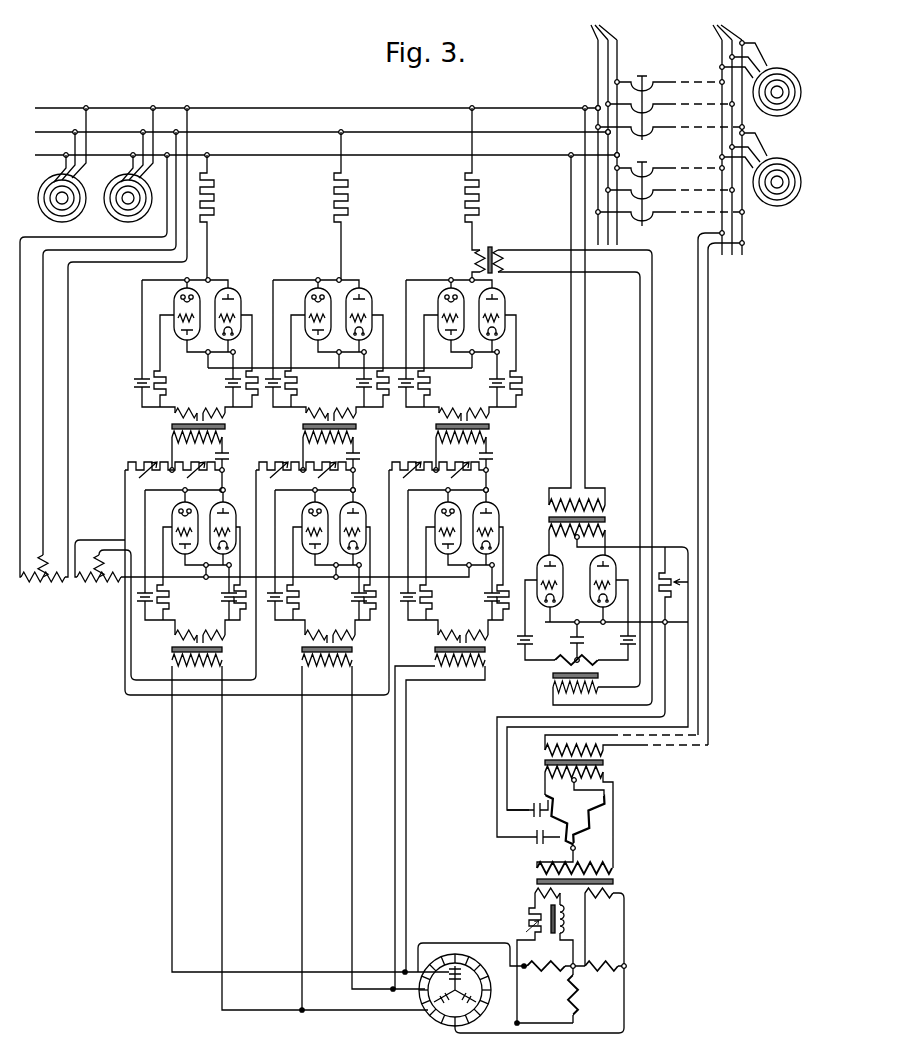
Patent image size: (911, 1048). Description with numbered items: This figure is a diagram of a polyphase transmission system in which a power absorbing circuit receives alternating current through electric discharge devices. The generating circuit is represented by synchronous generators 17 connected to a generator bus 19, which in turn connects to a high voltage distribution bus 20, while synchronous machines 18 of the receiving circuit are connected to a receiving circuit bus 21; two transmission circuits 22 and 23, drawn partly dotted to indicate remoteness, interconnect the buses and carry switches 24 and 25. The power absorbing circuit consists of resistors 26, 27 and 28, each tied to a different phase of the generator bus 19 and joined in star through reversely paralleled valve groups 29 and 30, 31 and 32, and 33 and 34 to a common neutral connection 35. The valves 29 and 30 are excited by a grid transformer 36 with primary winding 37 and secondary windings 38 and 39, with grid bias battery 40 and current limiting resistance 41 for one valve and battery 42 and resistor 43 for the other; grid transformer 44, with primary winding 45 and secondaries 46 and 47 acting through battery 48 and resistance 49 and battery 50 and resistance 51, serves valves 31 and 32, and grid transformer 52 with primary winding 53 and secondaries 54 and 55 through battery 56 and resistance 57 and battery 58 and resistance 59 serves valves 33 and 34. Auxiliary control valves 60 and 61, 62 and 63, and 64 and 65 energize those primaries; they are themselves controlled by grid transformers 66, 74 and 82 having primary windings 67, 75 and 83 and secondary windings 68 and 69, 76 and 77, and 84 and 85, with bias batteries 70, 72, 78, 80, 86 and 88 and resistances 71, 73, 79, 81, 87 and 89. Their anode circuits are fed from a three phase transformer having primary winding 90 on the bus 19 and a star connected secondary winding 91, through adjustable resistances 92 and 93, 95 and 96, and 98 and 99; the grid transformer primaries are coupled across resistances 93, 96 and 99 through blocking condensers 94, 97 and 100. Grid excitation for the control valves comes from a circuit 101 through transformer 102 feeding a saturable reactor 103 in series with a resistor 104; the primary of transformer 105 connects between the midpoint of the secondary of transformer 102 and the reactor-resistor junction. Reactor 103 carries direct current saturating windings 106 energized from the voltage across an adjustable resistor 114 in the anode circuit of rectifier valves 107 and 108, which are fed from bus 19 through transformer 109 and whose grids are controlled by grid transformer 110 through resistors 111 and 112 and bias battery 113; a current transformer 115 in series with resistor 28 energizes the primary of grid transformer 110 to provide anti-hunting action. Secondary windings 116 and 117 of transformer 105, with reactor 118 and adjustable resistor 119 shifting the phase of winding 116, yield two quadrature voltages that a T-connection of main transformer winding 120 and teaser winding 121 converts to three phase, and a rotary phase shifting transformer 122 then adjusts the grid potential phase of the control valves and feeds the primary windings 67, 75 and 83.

The synchronous generators 17 is at (110, 190).
The synchronous machines 18 is at (782, 118).
The generator bus 19 is at (518, 155).
The high voltage distribution bus 20 is at (599, 127).
The receiving circuit bus 21 is at (723, 132).
The transmission circuit 22 is at (716, 127).
The transmission circuit 23 is at (716, 212).
The switch 24 is at (648, 90).
The switch 25 is at (648, 176).
The resistor 26 is at (214, 192).
The resistor 27 is at (346, 192).
The resistor 28 is at (478, 192).
The valve 29 is at (176, 303).
The valve 30 is at (237, 306).
The valve 31 is at (307, 303).
The valve 32 is at (368, 306).
The valve 33 is at (440, 303).
The valve 34 is at (501, 306).
The common neutral connection 35 is at (293, 368).
The grid transformer 36 is at (172, 432).
The primary winding 37 is at (224, 440).
The secondary winding 38 is at (175, 414).
The secondary winding 39 is at (225, 414).
The grid bias battery 40 is at (135, 385).
The current limiting resistance 41 is at (167, 389).
The grid bias battery 42 is at (226, 388).
The current limiting resistor 43 is at (254, 402).
The grid transformer 44 is at (303, 432).
The primary winding 45 is at (357, 440).
The secondary winding 46 is at (306, 414).
The secondary winding 47 is at (356, 414).
The bias battery 48 is at (276, 375).
The resistance 49 is at (298, 389).
The bias battery 50 is at (358, 388).
The resistance 51 is at (385, 402).
The grid transformer 52 is at (441, 432).
The primary winding 53 is at (489, 440).
The secondary winding 54 is at (439, 414).
The secondary winding 55 is at (490, 414).
The bias battery 56 is at (405, 375).
The resistance 57 is at (431, 389).
The bias battery 58 is at (489, 388).
The resistance 59 is at (522, 386).
The valve 60 is at (179, 516).
The valve 61 is at (232, 514).
The valve 62 is at (308, 516).
The valve 63 is at (362, 514).
The valve 64 is at (441, 516).
The valve 65 is at (495, 514).
The grid transformer 66 is at (172, 656).
The primary winding 67 is at (224, 665).
The secondary winding 68 is at (175, 637).
The secondary winding 69 is at (225, 637).
The grid bias battery 70 is at (148, 610).
The current limiting resistance 71 is at (170, 598).
The grid bias battery 72 is at (226, 604).
The current limiting resistance 73 is at (240, 614).
The grid transformer 74 is at (302, 660).
The primary winding 75 is at (352, 665).
The secondary winding 76 is at (305, 637).
The secondary winding 77 is at (355, 637).
The bias battery 78 is at (276, 610).
The resistance 79 is at (300, 598).
The bias battery 80 is at (356, 604).
The resistance 81 is at (370, 614).
The grid transformer 82 is at (436, 660).
The primary winding 83 is at (485, 670).
The secondary winding 84 is at (438, 637).
The secondary winding 85 is at (488, 637).
The bias battery 86 is at (408, 610).
The resistance 87 is at (433, 598).
The bias battery 88 is at (489, 604).
The resistance 89 is at (505, 590).
The primary winding 90 is at (43, 580).
The secondary star connected winding 91 is at (99, 580).
The resistance 92 is at (146, 467).
The resistance 93 is at (200, 467).
The direct current blocking condenser 94 is at (224, 465).
The adjustable resistance 95 is at (280, 467).
The adjustable resistance 96 is at (332, 467).
The blocking condenser 97 is at (356, 465).
The resistance 98 is at (413, 467).
The resistance 99 is at (462, 467).
The blocking condenser 100 is at (487, 465).
The circuit 101 is at (709, 330).
The transformer 102 is at (606, 764).
The saturable reactor 103 is at (565, 805).
The resistor 104 is at (590, 830).
The transformer 105 is at (615, 880).
The direct current saturating windings 106 is at (530, 805).
The electric valve 107 is at (561, 573).
The electric valve 108 is at (612, 573).
The transformer 109 is at (605, 518).
The grid transformer 110 is at (598, 678).
The current limiting resistor 111 is at (531, 642).
The current limiting resistor 112 is at (624, 648).
The bias battery 113 is at (583, 640).
The adjustable resistor 114 is at (667, 563).
The current transformer 115 is at (489, 247).
The secondary winding 116 is at (535, 893).
The secondary winding 117 is at (615, 895).
The reactor 118 is at (566, 916).
The adjustable resistor 119 is at (527, 928).
The main transformer winding 120 is at (593, 961).
The teaser winding 121 is at (579, 1005).
The rotary phase shifting transformer 122 is at (455, 997).